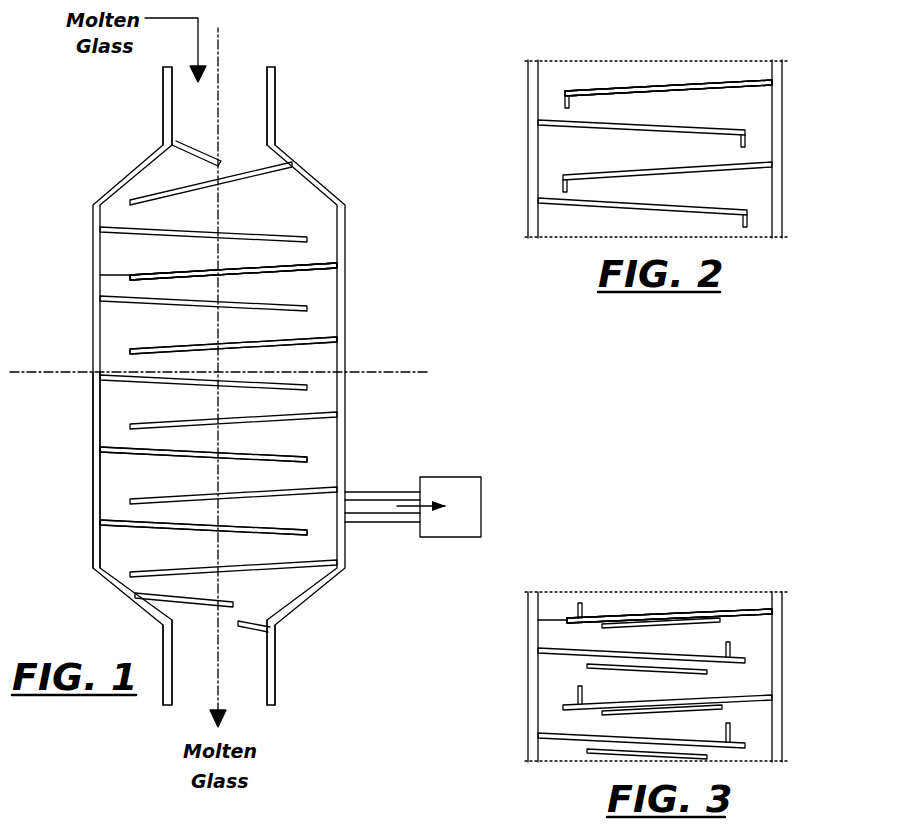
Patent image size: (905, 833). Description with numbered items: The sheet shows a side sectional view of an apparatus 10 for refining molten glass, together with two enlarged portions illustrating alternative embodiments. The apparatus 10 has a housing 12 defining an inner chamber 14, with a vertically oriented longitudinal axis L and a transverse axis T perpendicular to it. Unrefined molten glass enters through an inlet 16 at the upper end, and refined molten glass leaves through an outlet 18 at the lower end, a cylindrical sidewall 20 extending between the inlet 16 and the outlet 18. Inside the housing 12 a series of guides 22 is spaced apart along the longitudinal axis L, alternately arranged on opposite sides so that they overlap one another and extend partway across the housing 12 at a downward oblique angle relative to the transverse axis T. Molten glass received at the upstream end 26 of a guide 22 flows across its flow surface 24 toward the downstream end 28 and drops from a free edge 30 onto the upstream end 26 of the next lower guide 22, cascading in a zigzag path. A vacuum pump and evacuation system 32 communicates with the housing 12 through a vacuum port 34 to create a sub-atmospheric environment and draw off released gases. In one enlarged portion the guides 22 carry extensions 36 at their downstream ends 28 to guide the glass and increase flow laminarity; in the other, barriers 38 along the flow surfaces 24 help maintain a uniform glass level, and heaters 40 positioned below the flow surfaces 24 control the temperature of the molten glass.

In FIG. 1, the apparatus 10 is at (135, 124).
In FIG. 1, the housing 12 is at (112, 190).
In FIG. 2, the housing 12 is at (530, 172).
In FIG. 3, the housing 12 is at (530, 698).
In FIG. 1, the inner chamber 14 is at (292, 199).
In FIG. 2, the inner chamber 14 is at (667, 163).
In FIG. 3, the inner chamber 14 is at (670, 692).
In FIG. 1, the inlet 16 is at (250, 78).
In FIG. 1, the outlet 18 is at (253, 698).
In FIG. 1, the sidewall 20 is at (95, 393).
In FIG. 1, the guides 22 is at (317, 267).
In FIG. 2, the guides 22 is at (742, 89).
In FIG. 3, the guides 22 is at (743, 615).
In FIG. 1, the flow surfaces 24 is at (214, 269).
In FIG. 2, the flow surfaces 24 is at (662, 84).
In FIG. 3, the flow surfaces 24 is at (672, 611).
In FIG. 1, the upstream end 26 is at (315, 261).
In FIG. 2, the upstream end 26 is at (754, 78).
In FIG. 3, the upstream end 26 is at (753, 611).
In FIG. 1, the downstream end 28 is at (139, 274).
In FIG. 2, the downstream end 28 is at (596, 86).
In FIG. 3, the downstream end 28 is at (569, 616).
In FIG. 1, the free edge 30 is at (120, 275).
In FIG. 3, the free edge 30 is at (567, 620).
In FIG. 1, the vacuum pump and evacuation system 32 is at (468, 492).
In FIG. 1, the vacuum port 34 is at (380, 492).
In FIG. 2, the extensions 36 is at (563, 97).
In FIG. 3, the barriers 38 is at (584, 610).
In FIG. 3, the heaters 40 is at (696, 664).
In FIG. 1, the longitudinal axis L is at (220, 41).
In FIG. 1, the transverse axis T is at (42, 372).